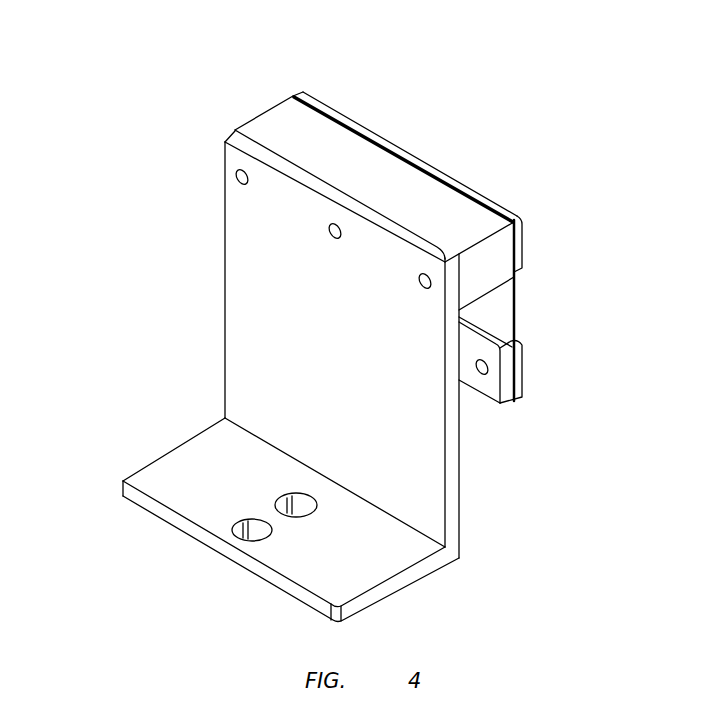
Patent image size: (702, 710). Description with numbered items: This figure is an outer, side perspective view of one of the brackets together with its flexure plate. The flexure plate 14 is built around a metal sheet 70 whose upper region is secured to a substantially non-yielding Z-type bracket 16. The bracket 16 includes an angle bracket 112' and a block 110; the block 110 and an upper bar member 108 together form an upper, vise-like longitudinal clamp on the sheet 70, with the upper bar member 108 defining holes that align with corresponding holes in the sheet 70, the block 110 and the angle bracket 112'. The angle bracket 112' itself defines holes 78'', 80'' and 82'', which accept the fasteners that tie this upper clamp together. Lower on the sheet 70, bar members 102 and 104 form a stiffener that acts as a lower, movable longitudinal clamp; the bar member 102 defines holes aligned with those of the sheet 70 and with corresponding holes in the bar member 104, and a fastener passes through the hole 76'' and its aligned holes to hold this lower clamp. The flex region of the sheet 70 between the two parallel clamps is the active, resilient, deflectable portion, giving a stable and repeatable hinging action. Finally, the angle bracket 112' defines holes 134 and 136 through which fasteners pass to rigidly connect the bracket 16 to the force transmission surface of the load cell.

The bracket 16 is at (140, 298).
The angle bracket 112' is at (300, 350).
The block 110 is at (268, 126).
The hole 82'' is at (201, 158).
The hole 80'' is at (313, 271).
The hole 78'' is at (392, 316).
The hole 134 is at (255, 526).
The hole 136 is at (298, 500).
The flexure plate 14 is at (592, 265).
The upper bar member 108 is at (522, 237).
The metal sheet 70 is at (516, 304).
The bar member 102 is at (525, 364).
The bar member 104 is at (492, 390).
The hole 76'' is at (536, 382).